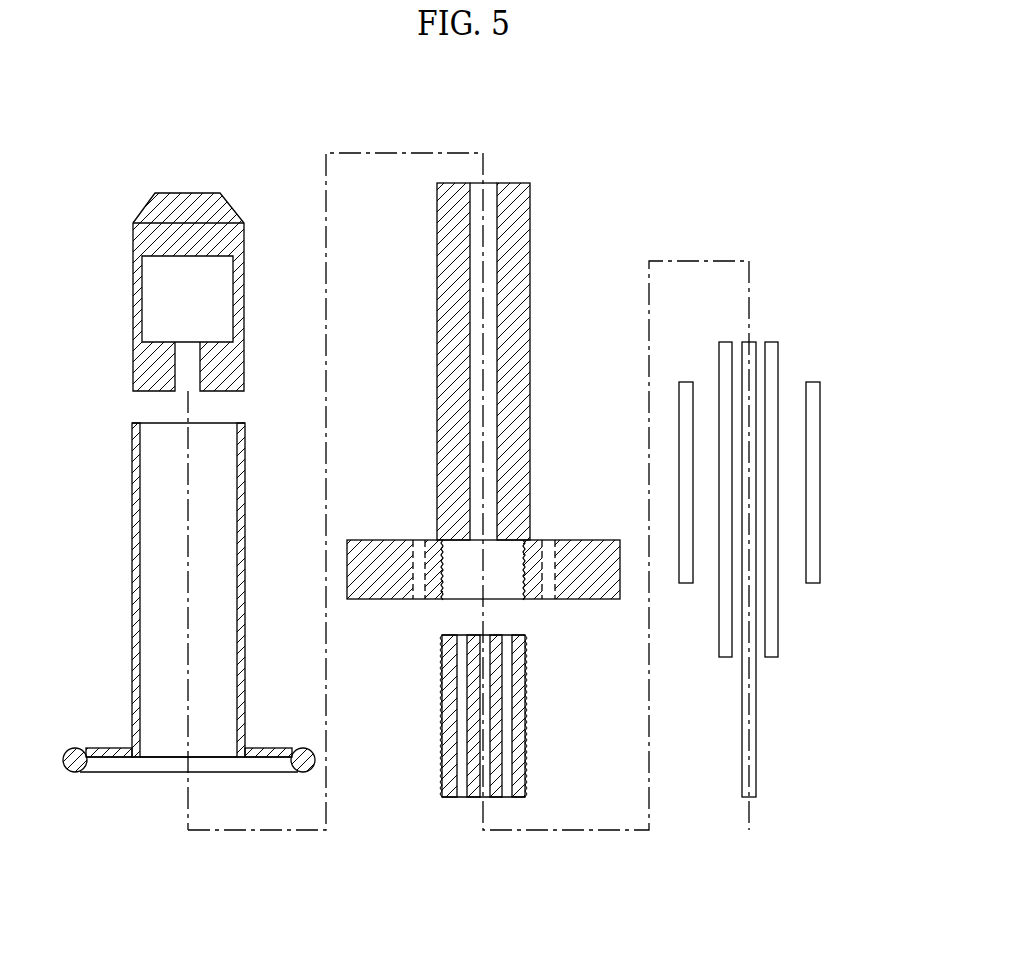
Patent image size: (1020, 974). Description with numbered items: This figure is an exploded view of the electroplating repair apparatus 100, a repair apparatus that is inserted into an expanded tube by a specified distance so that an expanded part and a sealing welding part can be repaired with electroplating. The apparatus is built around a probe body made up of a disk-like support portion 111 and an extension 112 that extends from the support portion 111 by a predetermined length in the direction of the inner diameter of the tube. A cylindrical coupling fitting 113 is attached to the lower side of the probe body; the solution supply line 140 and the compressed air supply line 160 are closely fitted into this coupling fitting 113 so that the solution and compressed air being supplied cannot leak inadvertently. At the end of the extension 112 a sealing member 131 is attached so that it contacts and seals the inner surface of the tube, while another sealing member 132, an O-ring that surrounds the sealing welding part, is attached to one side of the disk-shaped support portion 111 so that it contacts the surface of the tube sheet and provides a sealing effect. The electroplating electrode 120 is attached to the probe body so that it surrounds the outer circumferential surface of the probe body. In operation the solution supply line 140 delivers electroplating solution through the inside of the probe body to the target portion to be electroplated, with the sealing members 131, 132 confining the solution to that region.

The electroplating repair apparatus 100 is at (477, 117).
The support portion 111 is at (587, 553).
The extension 112 is at (531, 316).
The coupling fitting 113 is at (525, 710).
The electroplating electrode 120 is at (133, 551).
The sealing member 131 is at (133, 296).
The sealing member 132 is at (67, 749).
The solution supply line 140 is at (815, 552).
The compressed air supply line 160 is at (752, 688).